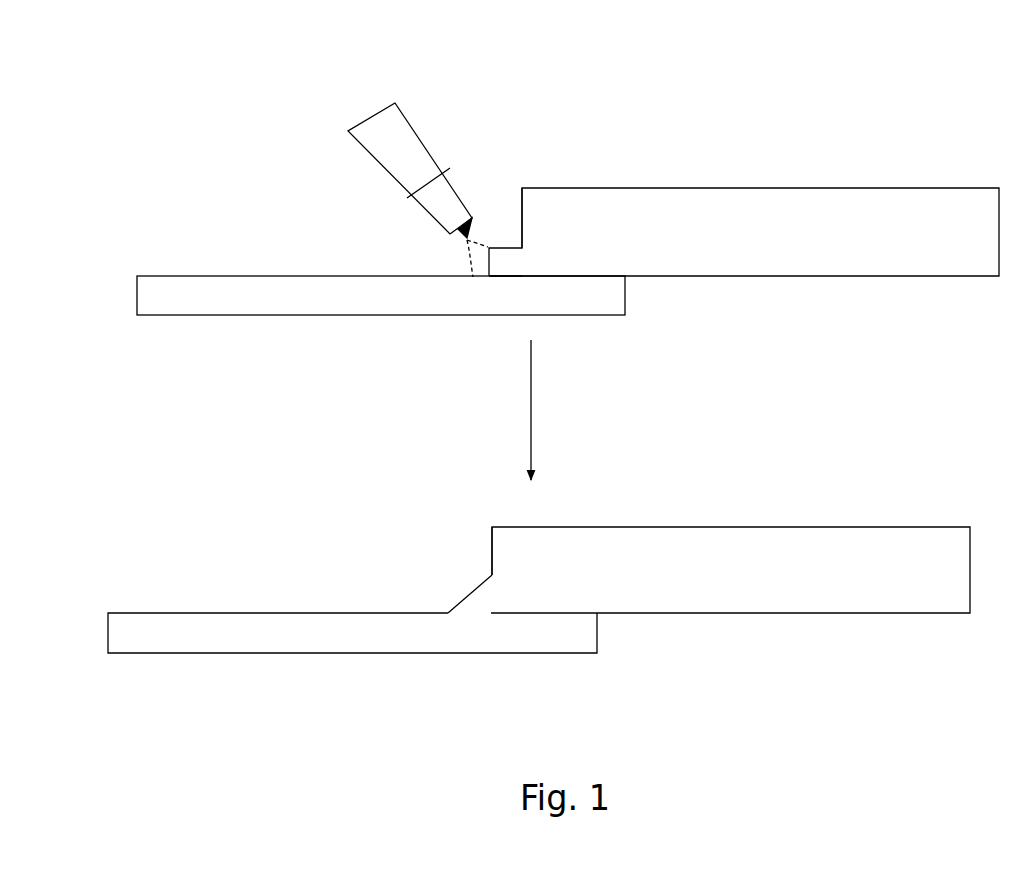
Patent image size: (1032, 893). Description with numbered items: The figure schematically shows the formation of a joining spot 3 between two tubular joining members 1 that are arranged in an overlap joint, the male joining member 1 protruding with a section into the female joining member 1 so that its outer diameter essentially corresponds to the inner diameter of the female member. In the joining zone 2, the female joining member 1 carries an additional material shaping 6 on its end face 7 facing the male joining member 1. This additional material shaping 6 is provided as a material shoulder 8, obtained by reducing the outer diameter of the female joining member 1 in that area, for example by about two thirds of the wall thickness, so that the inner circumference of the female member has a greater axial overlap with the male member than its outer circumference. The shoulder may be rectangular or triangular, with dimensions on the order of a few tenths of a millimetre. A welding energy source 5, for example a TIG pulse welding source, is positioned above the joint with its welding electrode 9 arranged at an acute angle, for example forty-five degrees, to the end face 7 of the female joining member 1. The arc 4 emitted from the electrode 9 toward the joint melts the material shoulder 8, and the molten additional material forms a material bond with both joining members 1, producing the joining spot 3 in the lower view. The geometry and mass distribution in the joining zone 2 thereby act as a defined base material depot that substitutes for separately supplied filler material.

The joining member 1 is at (159, 258).
The joining zone 2 is at (482, 110).
The joining spot 3 is at (470, 593).
The arc 4 is at (470, 252).
The welding energy source 5 is at (370, 117).
The additional material shaping 6 is at (509, 223).
The end face 7 is at (491, 552).
The material shoulder 8 is at (507, 265).
The welding electrode 9 is at (474, 228).